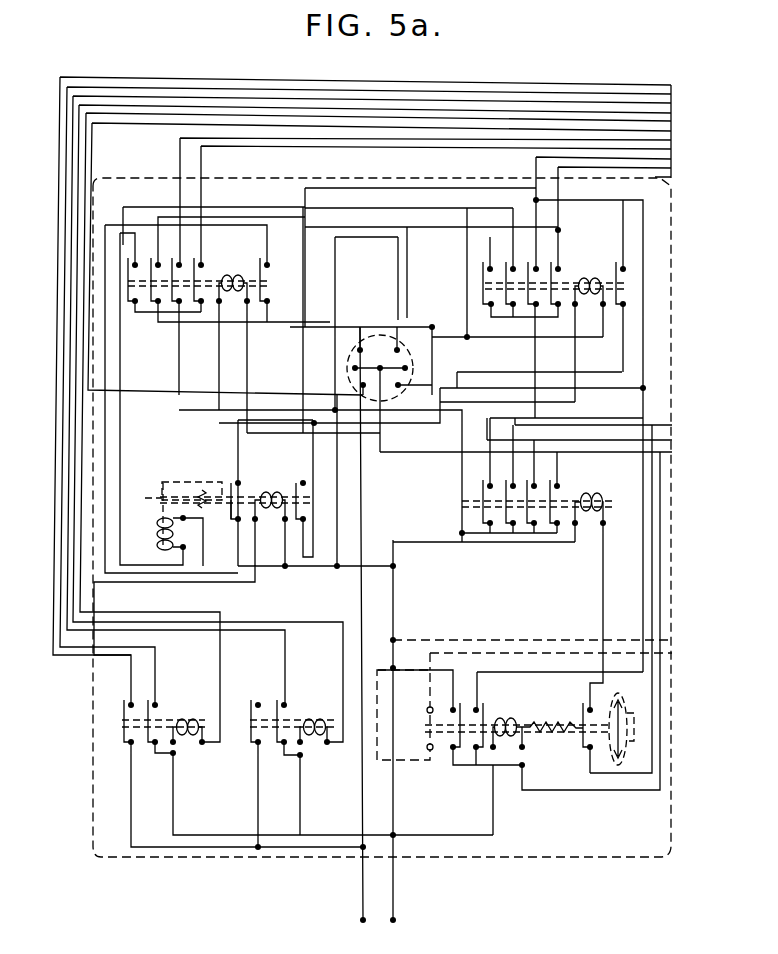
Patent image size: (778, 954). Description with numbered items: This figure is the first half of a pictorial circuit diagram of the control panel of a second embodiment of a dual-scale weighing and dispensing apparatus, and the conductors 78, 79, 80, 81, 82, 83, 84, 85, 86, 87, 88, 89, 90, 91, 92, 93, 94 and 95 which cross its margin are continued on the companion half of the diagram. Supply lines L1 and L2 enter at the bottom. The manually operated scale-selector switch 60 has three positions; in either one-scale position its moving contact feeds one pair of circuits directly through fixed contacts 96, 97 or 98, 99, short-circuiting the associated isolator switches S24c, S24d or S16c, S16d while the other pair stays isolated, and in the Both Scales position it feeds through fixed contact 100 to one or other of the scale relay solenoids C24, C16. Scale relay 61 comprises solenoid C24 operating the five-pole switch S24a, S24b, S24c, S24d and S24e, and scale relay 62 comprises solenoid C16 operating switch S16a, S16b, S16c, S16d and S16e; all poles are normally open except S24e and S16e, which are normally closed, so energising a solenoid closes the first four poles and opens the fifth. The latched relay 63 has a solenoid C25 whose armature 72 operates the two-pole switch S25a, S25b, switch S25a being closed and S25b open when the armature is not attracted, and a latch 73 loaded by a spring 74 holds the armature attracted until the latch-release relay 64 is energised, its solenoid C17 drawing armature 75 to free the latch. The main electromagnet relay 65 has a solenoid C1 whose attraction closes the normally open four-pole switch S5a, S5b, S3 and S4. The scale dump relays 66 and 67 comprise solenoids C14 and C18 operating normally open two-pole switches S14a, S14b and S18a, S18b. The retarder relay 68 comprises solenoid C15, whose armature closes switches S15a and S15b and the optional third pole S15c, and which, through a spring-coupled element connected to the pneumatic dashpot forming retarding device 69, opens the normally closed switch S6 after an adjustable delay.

The conductor 78 is at (360, 80).
The conductor 79 is at (387, 92).
The conductor 80 is at (427, 102).
The conductor 81 is at (460, 111).
The conductor 82 is at (492, 120).
The conductor 83 is at (515, 129).
The conductor 84 is at (545, 140).
The conductor 85 is at (557, 150).
The conductor 86 is at (580, 160).
The conductor 87 is at (610, 168).
The conductor 88 is at (664, 178).
The switch S24a is at (128, 258).
The switch S24b is at (152, 258).
The isolator switch S24c is at (176, 264).
The isolator switch S24d is at (199, 266).
The switch S24e is at (282, 255).
The solenoid C24 is at (268, 268).
The scale relay 61 is at (213, 308).
The scale-selector switch 60 is at (446, 320).
The fixed contact 98 is at (349, 351).
The fixed contact 97 is at (400, 350).
The fixed contact 100 is at (410, 368).
The fixed contact 96 is at (363, 386).
The fixed contact 99 is at (400, 387).
The scale relay 62 is at (538, 434).
The switch S16a is at (510, 266).
The switch S16b is at (485, 266).
The isolator switch S16c is at (558, 266).
The isolator switch S16d is at (531, 265).
The switch S16e is at (621, 270).
The solenoid C16 is at (593, 285).
The conductor 89 is at (600, 418).
The conductor 90 is at (618, 440).
The conductor 91 is at (669, 427).
The conductor 92 is at (668, 442).
The conductor 93 is at (668, 454).
The latched relay 63 is at (248, 481).
The switch S25a is at (300, 480).
The switch S25b is at (233, 483).
The solenoid C25 is at (270, 497).
The latch-release relay 64 is at (176, 510).
The latch 73 is at (197, 482).
The spring 74 is at (190, 500).
The armature 75 is at (142, 516).
The armature 72 is at (212, 510).
The solenoid C17 is at (183, 532).
The main electromagnet relay 65 is at (527, 564).
The switch S5a is at (484, 484).
The switch S5b is at (508, 482).
The switch S3 is at (532, 482).
The switch S4 is at (555, 484).
The solenoid C1 is at (600, 493).
The conductor 94 is at (668, 640).
The conductor 95 is at (668, 653).
The scale dump relay 66 is at (295, 758).
The switch S14a is at (123, 702).
The switch S14b is at (152, 702).
The solenoid C14 is at (197, 770).
The scale dump relay 67 is at (280, 759).
The switch S18a is at (252, 702).
The switch S18b is at (281, 702).
The solenoid C18 is at (320, 770).
The retarder relay 68 is at (493, 752).
The switch S15a is at (458, 708).
The switch S15b is at (480, 717).
The switch S15c is at (428, 708).
The solenoid C15 is at (515, 722).
The pneumatic retarding device 69 is at (595, 747).
The switch S6 is at (589, 707).
The power line L1 is at (365, 931).
The power line L2 is at (392, 931).